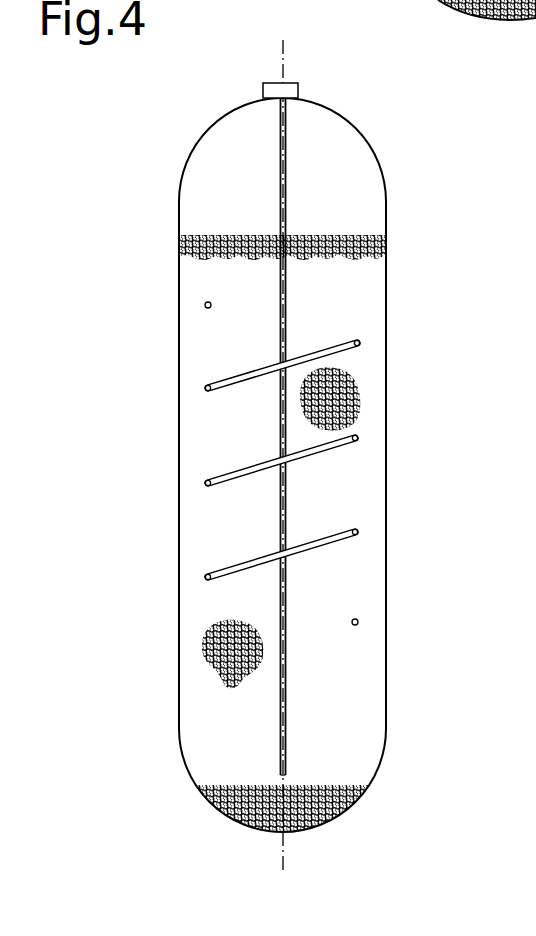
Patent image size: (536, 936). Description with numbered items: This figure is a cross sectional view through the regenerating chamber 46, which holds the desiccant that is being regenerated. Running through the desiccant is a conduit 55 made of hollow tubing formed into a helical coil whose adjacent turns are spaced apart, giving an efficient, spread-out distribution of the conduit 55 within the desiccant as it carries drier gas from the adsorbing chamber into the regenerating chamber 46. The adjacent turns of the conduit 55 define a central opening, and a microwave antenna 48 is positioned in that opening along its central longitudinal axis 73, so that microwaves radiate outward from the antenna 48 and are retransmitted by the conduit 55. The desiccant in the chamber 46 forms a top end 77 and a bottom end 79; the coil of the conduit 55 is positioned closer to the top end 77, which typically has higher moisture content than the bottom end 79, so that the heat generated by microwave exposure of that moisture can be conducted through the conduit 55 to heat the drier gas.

The regenerating chamber 46 is at (386, 268).
The microwave antenna 48 is at (287, 205).
The conduit 55 is at (359, 342).
The central longitudinal axis 73 is at (283, 52).
The top end 77 is at (220, 238).
The bottom end 79 is at (230, 812).